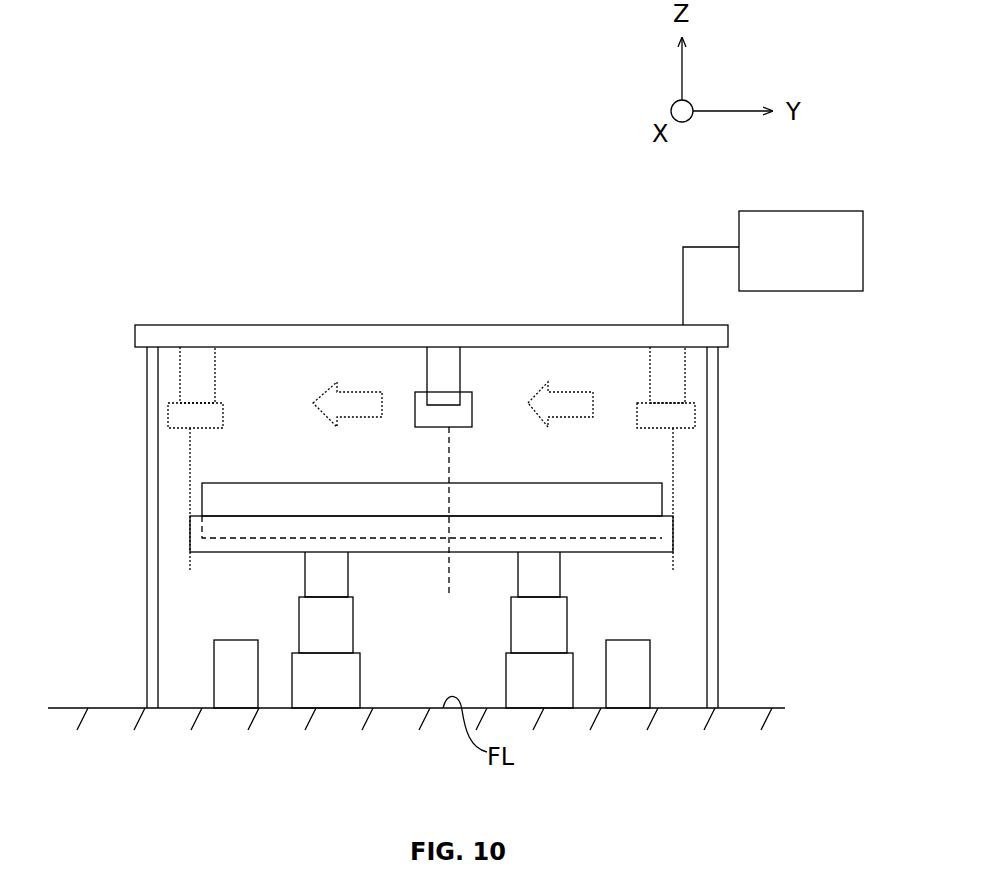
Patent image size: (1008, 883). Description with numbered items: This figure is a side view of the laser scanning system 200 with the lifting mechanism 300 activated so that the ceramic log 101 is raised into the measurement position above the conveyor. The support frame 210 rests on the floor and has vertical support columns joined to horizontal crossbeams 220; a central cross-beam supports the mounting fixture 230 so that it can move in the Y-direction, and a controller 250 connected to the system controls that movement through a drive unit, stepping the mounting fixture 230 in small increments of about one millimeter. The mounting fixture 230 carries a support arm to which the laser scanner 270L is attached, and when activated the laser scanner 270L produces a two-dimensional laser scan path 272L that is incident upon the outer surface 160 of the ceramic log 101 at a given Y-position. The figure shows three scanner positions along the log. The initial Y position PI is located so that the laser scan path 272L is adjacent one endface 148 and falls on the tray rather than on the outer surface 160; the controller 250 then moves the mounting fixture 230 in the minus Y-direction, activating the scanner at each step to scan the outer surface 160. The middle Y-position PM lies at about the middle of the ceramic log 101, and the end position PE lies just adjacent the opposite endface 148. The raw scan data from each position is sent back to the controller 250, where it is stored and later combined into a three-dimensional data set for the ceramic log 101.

The laser scanning system 200 is at (200, 178).
The support frame 210 is at (268, 322).
The horizontal crossbeams 220 is at (503, 325).
The mounting fixture 230 is at (444, 363).
The controller 250 is at (773, 268).
The laser scanner 270L is at (466, 403).
The laser scan path 272L is at (449, 565).
The ceramic log 101 is at (405, 483).
The outer surface 160 is at (490, 497).
The endface 148 is at (202, 500).
The lifting mechanism 300 is at (430, 630).
The end position PE is at (178, 370).
The middle Y-position PM is at (415, 372).
The initial Y position PI is at (636, 378).